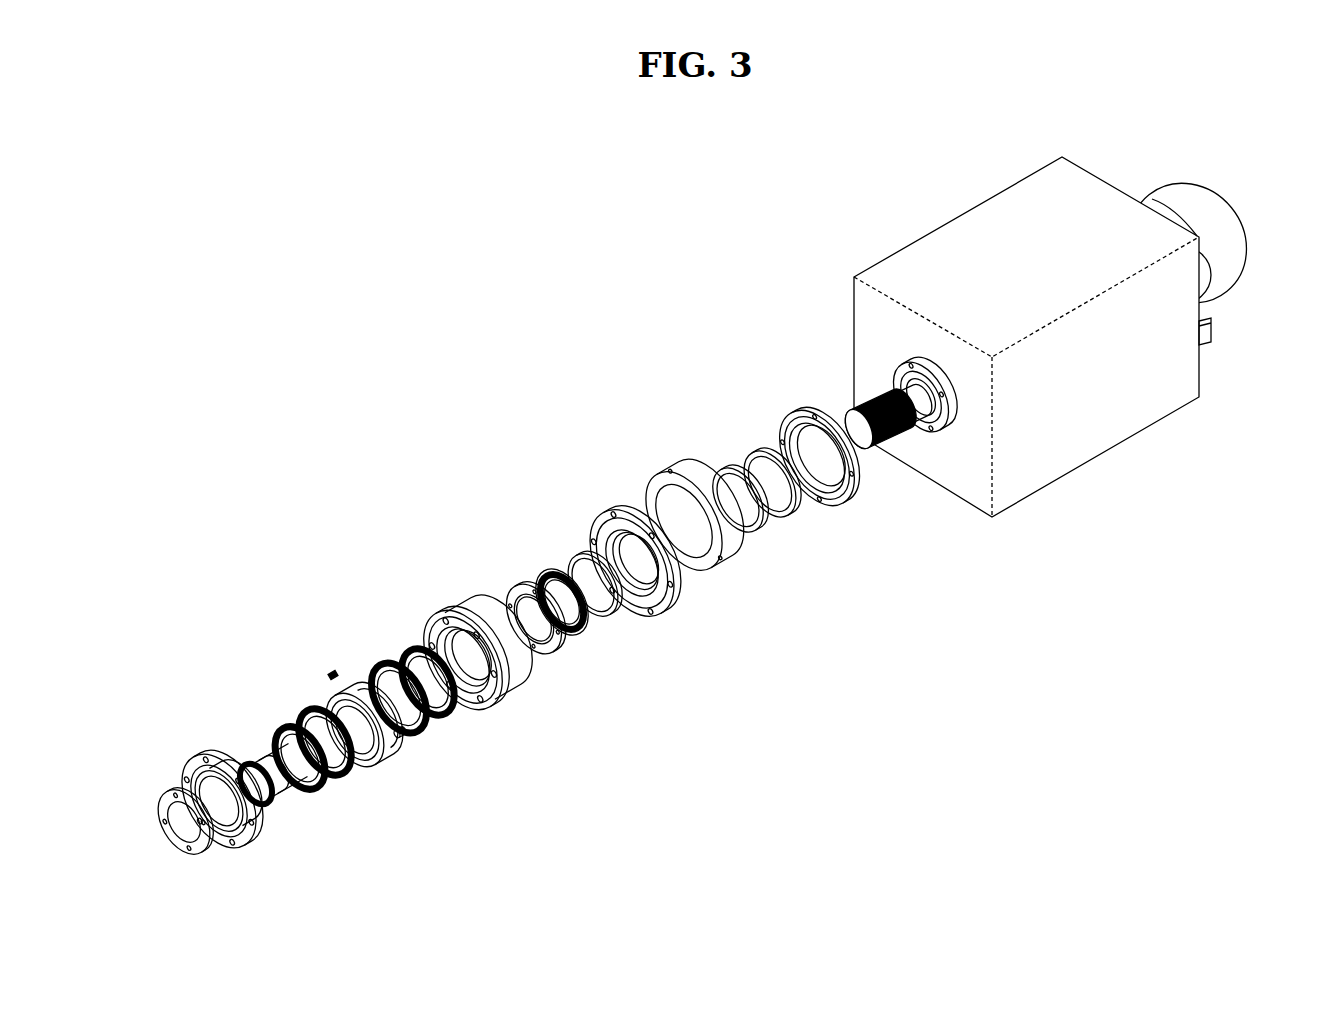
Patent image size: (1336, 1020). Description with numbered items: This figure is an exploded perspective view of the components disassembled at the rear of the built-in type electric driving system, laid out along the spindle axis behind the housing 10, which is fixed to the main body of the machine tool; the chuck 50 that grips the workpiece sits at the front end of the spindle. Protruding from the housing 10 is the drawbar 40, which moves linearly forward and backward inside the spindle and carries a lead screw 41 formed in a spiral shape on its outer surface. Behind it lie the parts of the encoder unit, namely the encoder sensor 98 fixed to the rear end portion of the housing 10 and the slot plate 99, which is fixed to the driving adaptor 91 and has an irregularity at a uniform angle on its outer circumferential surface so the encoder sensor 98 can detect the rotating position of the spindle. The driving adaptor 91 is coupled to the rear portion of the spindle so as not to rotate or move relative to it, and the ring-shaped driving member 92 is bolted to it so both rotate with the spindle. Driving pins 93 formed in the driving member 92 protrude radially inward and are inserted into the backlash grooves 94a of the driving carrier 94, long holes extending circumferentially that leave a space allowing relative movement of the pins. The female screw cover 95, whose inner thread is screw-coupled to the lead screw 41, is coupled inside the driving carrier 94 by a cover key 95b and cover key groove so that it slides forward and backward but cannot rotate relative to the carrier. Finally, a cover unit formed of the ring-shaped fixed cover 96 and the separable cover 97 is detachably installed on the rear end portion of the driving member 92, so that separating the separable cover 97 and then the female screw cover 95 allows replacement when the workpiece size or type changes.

The housing 10 is at (1093, 445).
The drawbar 40 is at (905, 382).
The lead screw 41 is at (876, 452).
The chuck 50 is at (1167, 190).
The driving adaptor 91 is at (618, 522).
The driving member 92 is at (462, 607).
The driving pin 93 is at (333, 670).
The driving carrier 94 is at (368, 752).
The backlash groove 94a is at (398, 738).
The female screw cover 95 is at (270, 778).
The cover key 95b is at (263, 762).
The fixed cover 96 is at (200, 766).
The separable cover 97 is at (183, 847).
The encoder sensor 98 is at (801, 421).
The slot plate 99 is at (783, 522).